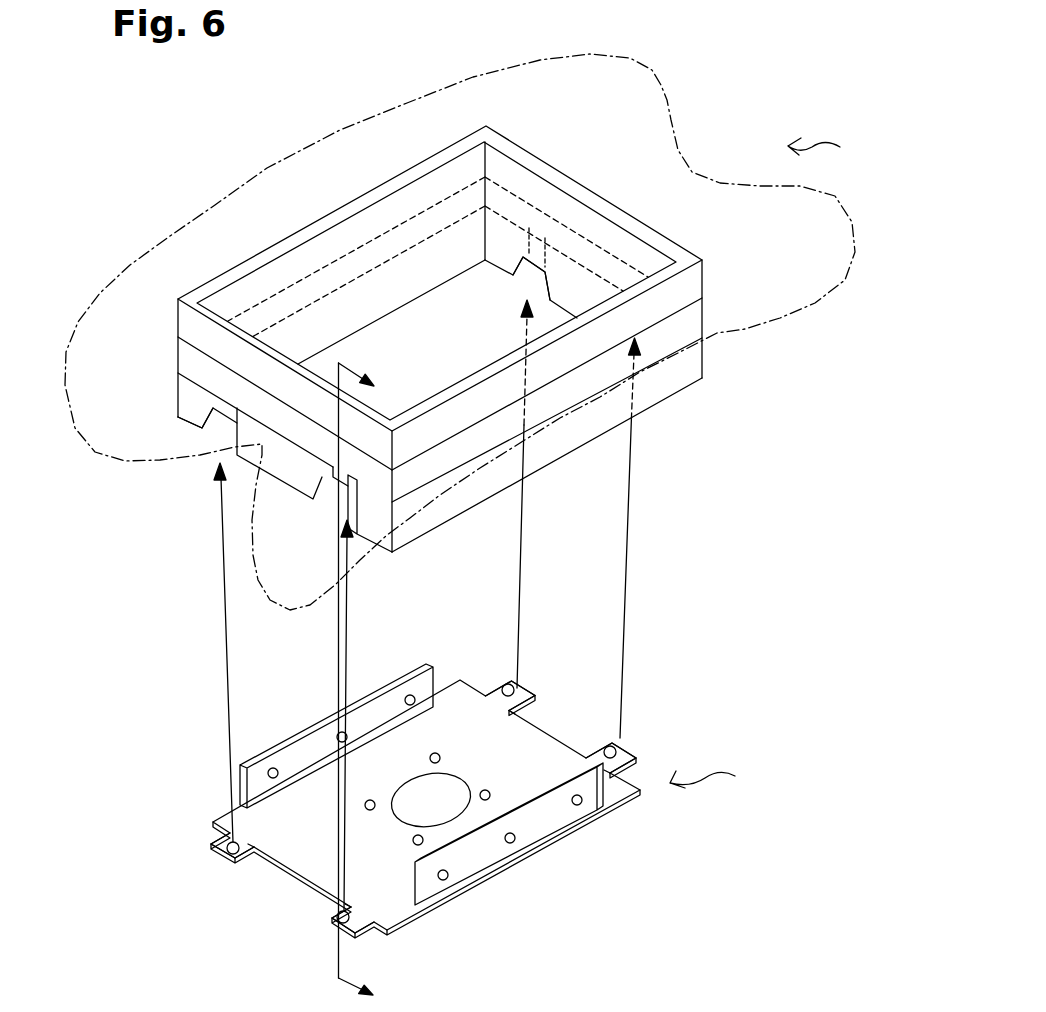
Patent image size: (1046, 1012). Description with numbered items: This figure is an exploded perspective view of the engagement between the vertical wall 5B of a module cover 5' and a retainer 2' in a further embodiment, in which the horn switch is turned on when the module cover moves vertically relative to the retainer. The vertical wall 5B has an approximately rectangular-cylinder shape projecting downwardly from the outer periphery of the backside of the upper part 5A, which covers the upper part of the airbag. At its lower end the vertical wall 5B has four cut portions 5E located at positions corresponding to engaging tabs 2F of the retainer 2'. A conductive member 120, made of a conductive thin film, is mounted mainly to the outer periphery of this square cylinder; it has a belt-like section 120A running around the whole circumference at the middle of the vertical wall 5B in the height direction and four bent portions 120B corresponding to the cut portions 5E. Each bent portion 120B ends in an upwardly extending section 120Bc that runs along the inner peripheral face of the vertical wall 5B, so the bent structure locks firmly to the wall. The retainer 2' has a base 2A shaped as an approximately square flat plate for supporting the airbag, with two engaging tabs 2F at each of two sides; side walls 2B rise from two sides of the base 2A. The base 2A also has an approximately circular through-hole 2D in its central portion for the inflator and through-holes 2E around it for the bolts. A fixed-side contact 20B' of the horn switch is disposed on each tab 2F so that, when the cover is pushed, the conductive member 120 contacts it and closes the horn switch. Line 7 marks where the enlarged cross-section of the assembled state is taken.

The upper part 5A is at (668, 90).
The module cover 5' is at (827, 145).
The vertical wall 5B is at (532, 162).
The conductive member 120 is at (366, 425).
The bent portion 120B is at (227, 405).
The belt-like section 120A is at (190, 360).
The upwardly extending section 120Bc is at (549, 263).
The cut portion 5E is at (520, 265).
The section line 7 is at (371, 687).
The retainer 2' is at (715, 782).
The base 2A is at (465, 682).
The side wall 2B is at (300, 753).
The through-hole 2D is at (414, 792).
The through-hole 2E is at (484, 790).
The engaging tab 2F is at (518, 686).
The fixed-side contact 20B' is at (426, 808).